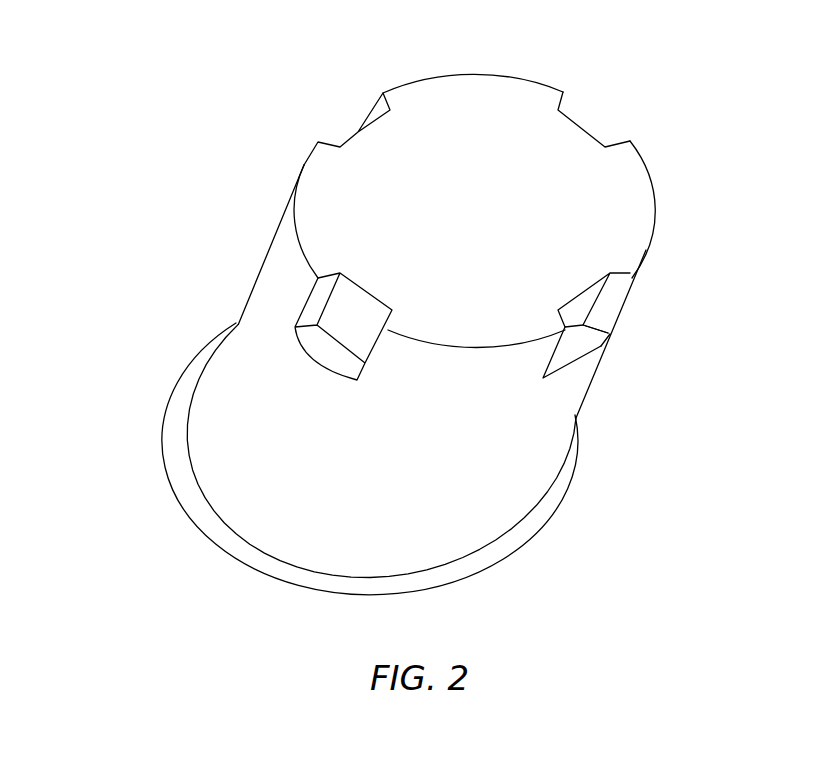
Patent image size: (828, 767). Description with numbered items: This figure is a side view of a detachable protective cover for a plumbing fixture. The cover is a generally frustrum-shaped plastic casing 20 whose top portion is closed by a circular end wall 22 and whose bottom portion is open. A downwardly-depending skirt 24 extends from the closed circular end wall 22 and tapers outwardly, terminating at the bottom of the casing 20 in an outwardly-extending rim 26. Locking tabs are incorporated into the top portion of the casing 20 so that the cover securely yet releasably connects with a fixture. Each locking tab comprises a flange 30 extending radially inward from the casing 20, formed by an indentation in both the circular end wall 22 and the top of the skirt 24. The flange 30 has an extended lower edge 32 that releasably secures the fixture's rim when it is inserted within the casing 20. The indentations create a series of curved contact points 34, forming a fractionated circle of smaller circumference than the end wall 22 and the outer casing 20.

The plastic casing 20 is at (302, 165).
The closed circular end wall 22 is at (640, 206).
The downwardly-depending skirt 24 is at (257, 274).
The outwardly-extending rim 26 is at (193, 371).
The flange 30 is at (584, 330).
The extended lower edge 32 is at (571, 357).
The curved contact points 34 is at (582, 305).